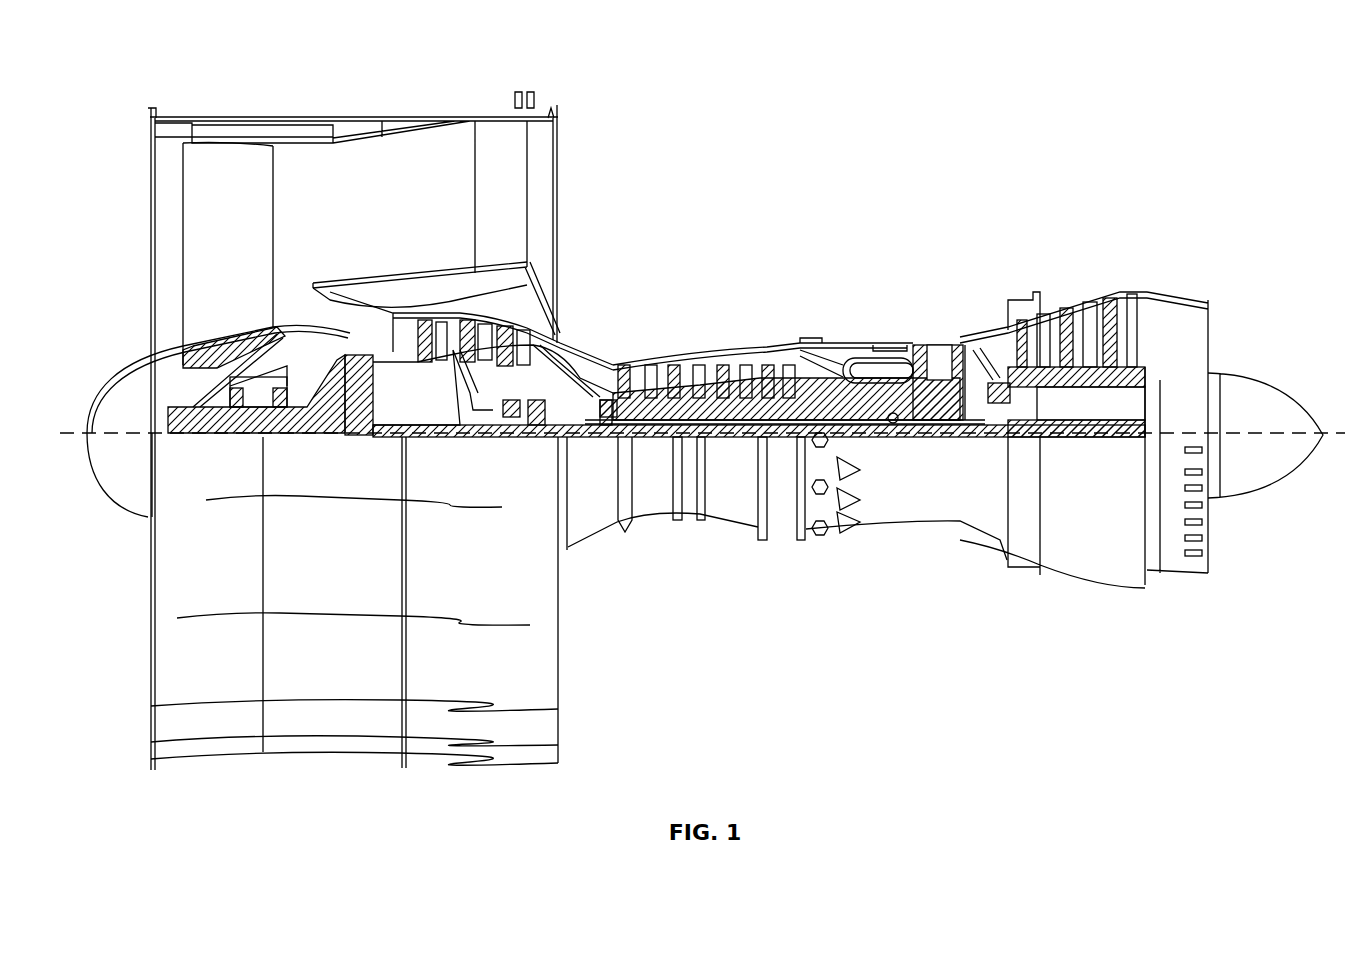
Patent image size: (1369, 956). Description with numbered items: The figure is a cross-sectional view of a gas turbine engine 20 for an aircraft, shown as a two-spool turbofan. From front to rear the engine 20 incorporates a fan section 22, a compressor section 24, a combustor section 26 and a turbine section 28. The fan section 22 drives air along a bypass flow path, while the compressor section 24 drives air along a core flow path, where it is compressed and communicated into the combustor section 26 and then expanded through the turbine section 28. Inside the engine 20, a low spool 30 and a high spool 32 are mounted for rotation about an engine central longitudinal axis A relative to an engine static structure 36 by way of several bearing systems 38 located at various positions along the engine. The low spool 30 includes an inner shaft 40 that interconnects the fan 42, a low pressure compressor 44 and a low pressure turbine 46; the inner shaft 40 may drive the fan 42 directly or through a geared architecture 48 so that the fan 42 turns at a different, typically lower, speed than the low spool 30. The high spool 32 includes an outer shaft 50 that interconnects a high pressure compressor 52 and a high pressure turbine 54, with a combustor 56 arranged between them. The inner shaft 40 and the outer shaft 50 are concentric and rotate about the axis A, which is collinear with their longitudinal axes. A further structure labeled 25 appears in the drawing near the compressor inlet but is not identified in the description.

The gas turbine engine 20 is at (919, 170).
The fan section 22 is at (252, 66).
The compressor section 24 is at (613, 322).
The bearing compartment 25 is at (525, 352).
The combustor section 26 is at (836, 328).
The turbine section 28 is at (1037, 283).
The low spool 30 is at (721, 430).
The high spool 32 is at (755, 380).
The engine static structure 36 is at (781, 544).
The bearing systems 38 is at (532, 427).
The inner shaft 40 is at (607, 432).
The fan 42 is at (227, 226).
The low pressure compressor 44 is at (487, 327).
The low pressure turbine 46 is at (1080, 307).
The geared architecture 48 is at (358, 422).
The outer shaft 50 is at (900, 417).
The high pressure compressor 52 is at (725, 400).
The high pressure turbine 54 is at (940, 345).
The combustor 56 is at (875, 368).
The engine central longitudinal axis A is at (1256, 440).